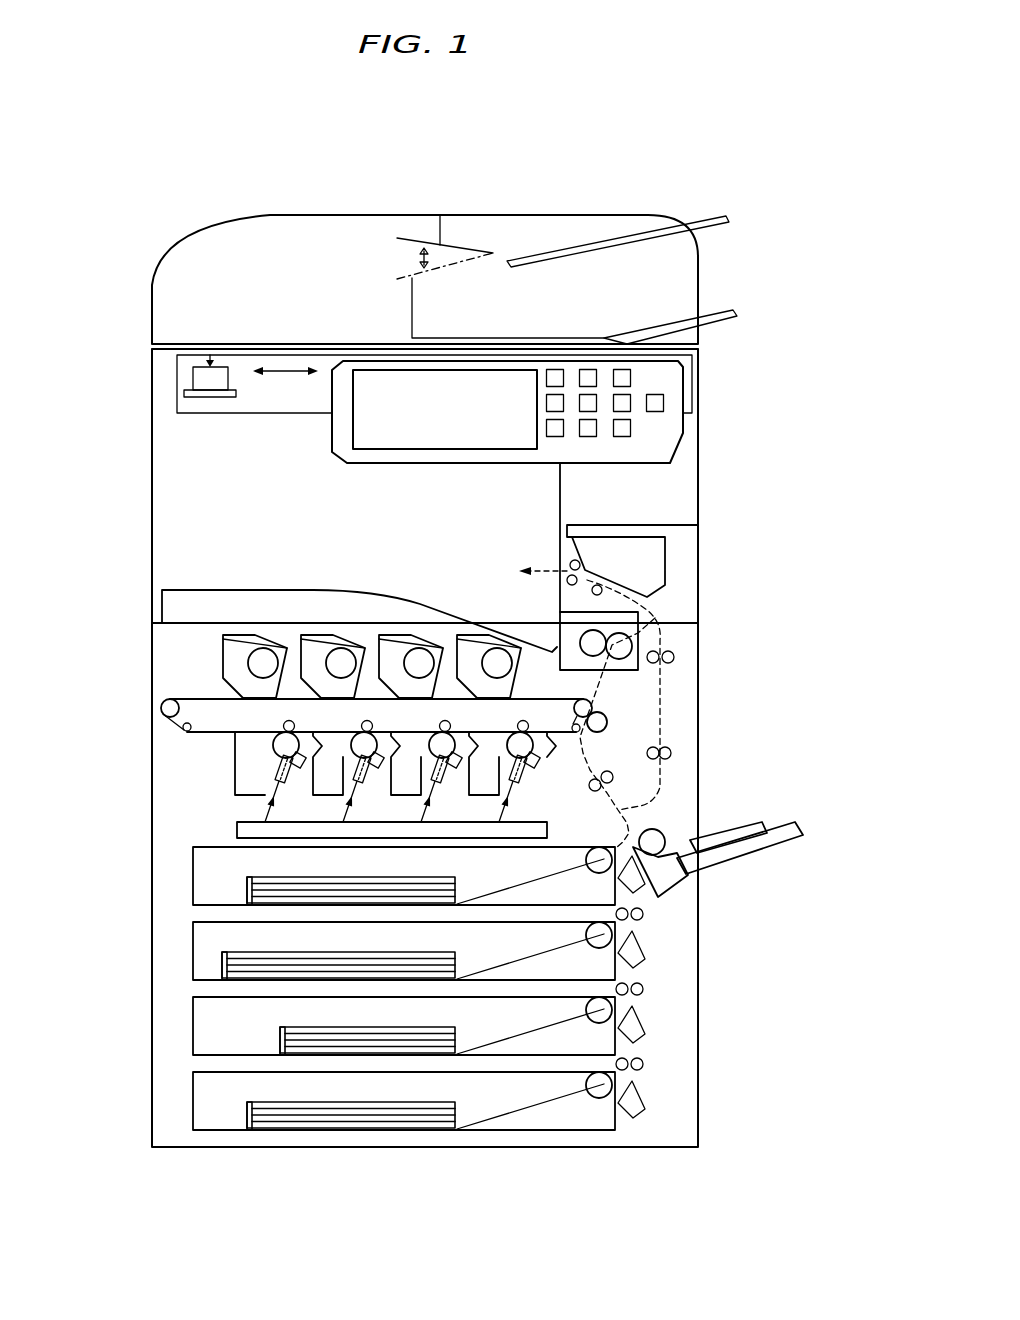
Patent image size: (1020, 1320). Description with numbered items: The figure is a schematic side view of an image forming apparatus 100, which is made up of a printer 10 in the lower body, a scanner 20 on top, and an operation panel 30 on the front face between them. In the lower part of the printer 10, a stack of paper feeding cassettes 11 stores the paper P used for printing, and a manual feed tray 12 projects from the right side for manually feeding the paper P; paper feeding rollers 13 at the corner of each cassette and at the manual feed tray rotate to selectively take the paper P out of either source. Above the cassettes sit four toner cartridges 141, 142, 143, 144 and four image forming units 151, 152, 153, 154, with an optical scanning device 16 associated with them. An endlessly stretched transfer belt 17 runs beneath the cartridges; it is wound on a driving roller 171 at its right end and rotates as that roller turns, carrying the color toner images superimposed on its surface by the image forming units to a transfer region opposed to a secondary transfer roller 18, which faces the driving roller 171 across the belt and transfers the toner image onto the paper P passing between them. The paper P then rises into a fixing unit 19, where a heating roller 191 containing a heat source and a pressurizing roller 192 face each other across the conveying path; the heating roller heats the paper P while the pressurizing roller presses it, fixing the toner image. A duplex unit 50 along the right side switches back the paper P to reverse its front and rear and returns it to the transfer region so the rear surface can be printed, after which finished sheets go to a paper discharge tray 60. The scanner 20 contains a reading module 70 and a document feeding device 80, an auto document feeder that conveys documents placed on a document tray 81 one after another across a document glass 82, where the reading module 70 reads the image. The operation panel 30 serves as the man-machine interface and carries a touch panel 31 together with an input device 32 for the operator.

The image forming apparatus 100 is at (640, 147).
The printer 10 is at (728, 610).
The paper feeding cassettes 11 is at (193, 877).
The manual feed tray 12 is at (785, 821).
The paper feeding rollers 13 is at (655, 840).
The optical scanning device 16 is at (304, 838).
The transfer belt 17 is at (162, 712).
The secondary transfer roller 18 is at (598, 722).
The fixing unit 19 is at (640, 637).
The scanner 20 is at (120, 357).
The operation panel 30 is at (683, 427).
The touch panel 31 is at (440, 435).
The input device 32 is at (638, 380).
The duplex unit 50 is at (683, 690).
The paper discharge tray 60 is at (313, 590).
The reading module 70 is at (180, 372).
The document feeding device 80 is at (170, 273).
The document tray 81 is at (518, 228).
The document glass 82 is at (332, 348).
The toner cartridge 141 is at (230, 654).
The toner cartridge 142 is at (305, 650).
The toner cartridge 143 is at (388, 648).
The toner cartridge 144 is at (460, 650).
The image forming unit 151 is at (235, 765).
The image forming unit 152 is at (297, 785).
The image forming unit 153 is at (405, 808).
The image forming unit 154 is at (560, 755).
The driving roller 171 is at (580, 706).
The heating roller 191 is at (590, 643).
The pressurizing roller 192 is at (620, 647).
The paper P is at (455, 877).